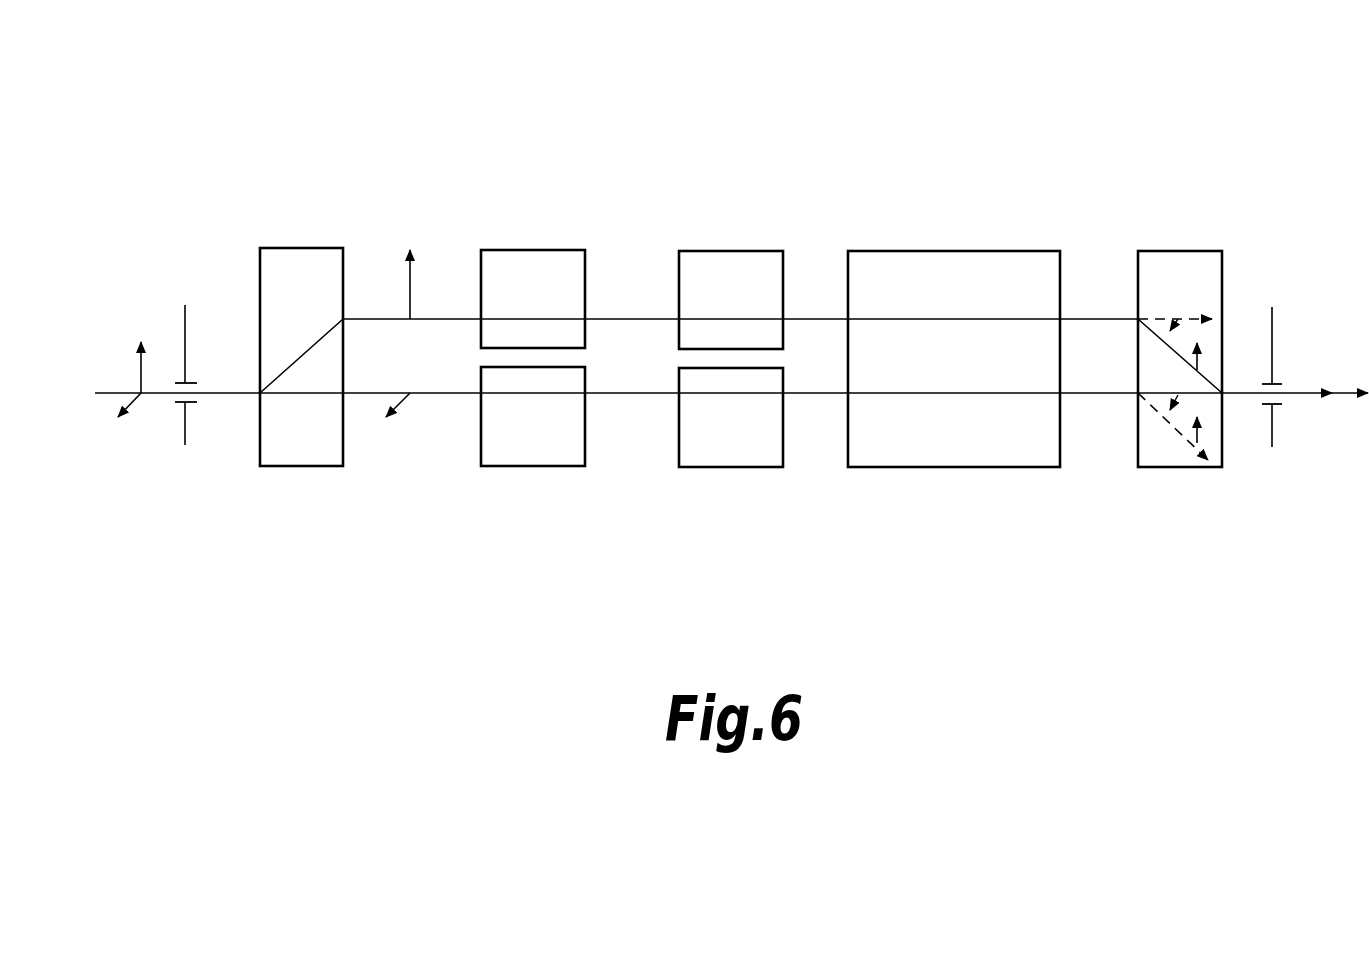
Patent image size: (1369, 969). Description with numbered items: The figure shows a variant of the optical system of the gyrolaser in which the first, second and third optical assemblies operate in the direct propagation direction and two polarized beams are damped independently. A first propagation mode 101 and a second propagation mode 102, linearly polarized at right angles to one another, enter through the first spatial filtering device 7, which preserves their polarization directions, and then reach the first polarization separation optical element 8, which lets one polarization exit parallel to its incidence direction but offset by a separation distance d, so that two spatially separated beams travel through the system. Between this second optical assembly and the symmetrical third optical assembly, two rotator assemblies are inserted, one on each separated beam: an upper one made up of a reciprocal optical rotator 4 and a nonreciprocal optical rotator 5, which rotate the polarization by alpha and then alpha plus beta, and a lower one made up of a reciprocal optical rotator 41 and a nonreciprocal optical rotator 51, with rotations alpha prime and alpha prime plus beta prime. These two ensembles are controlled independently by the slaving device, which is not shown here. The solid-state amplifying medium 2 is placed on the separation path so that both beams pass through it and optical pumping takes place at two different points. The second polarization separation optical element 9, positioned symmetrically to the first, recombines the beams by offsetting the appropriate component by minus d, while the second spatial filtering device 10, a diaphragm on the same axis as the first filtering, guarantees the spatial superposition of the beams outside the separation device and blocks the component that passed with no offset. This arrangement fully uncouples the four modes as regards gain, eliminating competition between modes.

The solid-state amplifying medium 2 is at (967, 467).
The reciprocal optical rotator 4 is at (562, 250).
The first nonreciprocal optical rotator 5 is at (758, 251).
The first spatial filtering device 7 is at (186, 426).
The first polarization separation optical element 8 is at (310, 466).
The second polarization separation optical element 9 is at (1182, 467).
The second spatial filtering device 10 is at (1275, 427).
The reciprocal optical rotator 41 is at (572, 466).
The nonreciprocal optical rotator 51 is at (775, 467).
The first propagation mode 101 is at (141, 373).
The second propagation mode 102 is at (133, 401).